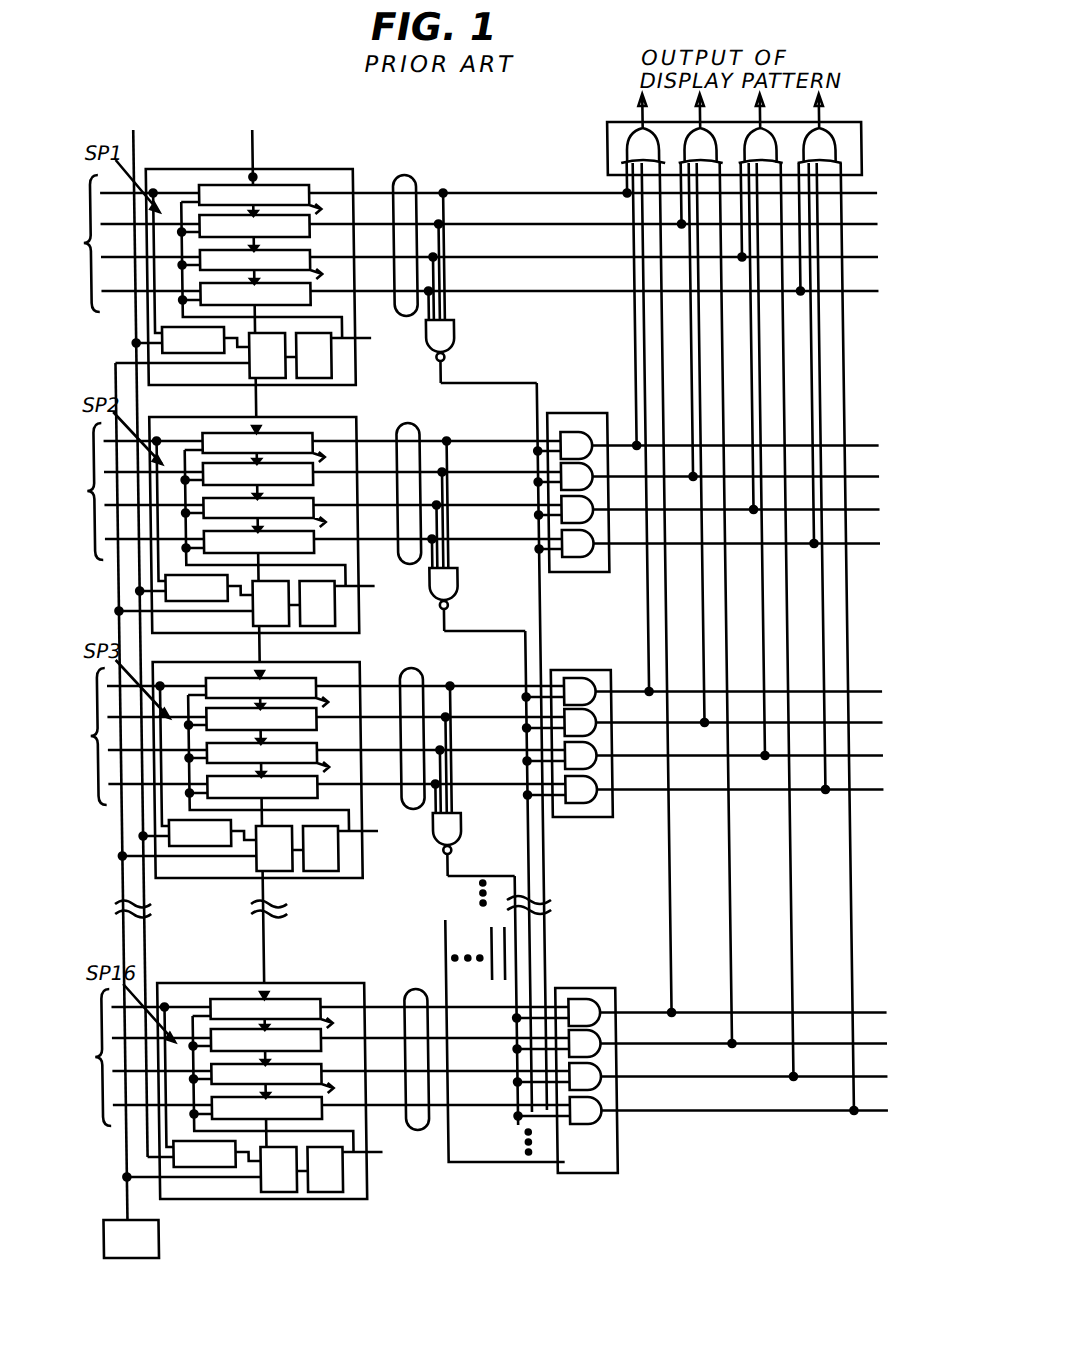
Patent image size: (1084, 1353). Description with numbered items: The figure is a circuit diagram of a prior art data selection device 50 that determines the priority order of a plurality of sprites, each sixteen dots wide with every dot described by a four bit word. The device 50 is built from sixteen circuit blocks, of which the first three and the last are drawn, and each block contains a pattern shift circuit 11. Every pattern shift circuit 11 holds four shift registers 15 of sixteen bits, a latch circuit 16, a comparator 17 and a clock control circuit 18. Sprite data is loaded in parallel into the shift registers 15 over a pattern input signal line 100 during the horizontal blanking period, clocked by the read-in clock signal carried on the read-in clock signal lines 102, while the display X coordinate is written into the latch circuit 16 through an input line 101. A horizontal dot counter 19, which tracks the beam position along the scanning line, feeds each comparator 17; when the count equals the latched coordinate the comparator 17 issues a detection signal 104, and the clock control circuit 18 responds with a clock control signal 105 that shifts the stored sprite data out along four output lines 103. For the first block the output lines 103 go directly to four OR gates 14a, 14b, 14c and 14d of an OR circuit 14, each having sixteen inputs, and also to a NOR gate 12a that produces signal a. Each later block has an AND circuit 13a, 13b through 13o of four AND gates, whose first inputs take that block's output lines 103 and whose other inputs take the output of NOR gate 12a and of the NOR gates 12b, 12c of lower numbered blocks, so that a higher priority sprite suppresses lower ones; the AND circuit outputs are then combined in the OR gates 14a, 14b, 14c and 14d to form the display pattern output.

The data selection device 50 is at (284, 647).
The pattern shift circuit 11 is at (366, 977).
The shift register 15 is at (281, 652).
The latch circuit 16 is at (199, 747).
The comparator 17 is at (273, 762).
The clock control circuit 18 is at (319, 762).
The horizontal dot counter 19 is at (147, 1240).
The pattern input signal line 100 is at (256, 148).
The input line 101 is at (139, 134).
The read-in clock signal line 102 is at (470, 650).
The output line 103 is at (400, 981).
The detection signal 104 is at (289, 786).
The clock control signal 105 is at (380, 749).
The NOR gate 12a is at (457, 326).
The NOR gate 12b is at (457, 574).
The NOR gate 12c is at (457, 819).
The AND circuit 13a is at (590, 407).
The AND circuit 13b is at (595, 670).
The AND circuit 13o is at (597, 988).
The OR circuit 14 is at (611, 142).
The OR gate 14a is at (659, 140).
The OR gate 14b is at (717, 142).
The OR gate 14c is at (772, 138).
The OR gate 14d is at (828, 138).